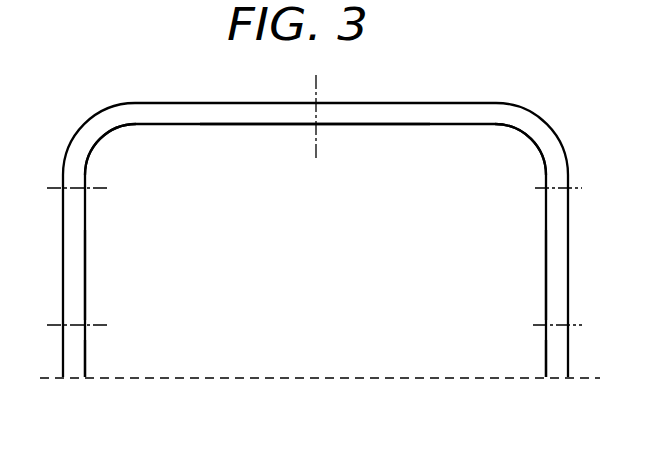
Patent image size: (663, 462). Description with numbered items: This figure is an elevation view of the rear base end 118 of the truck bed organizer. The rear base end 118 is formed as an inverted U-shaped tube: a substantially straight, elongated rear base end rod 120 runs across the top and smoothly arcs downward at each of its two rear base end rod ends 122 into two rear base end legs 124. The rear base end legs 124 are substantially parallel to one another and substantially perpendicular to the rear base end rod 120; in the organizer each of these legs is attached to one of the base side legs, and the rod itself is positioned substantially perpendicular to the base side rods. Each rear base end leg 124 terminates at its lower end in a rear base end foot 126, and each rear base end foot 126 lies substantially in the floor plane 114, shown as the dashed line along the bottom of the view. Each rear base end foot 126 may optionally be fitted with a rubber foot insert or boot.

The floor plane 114 is at (348, 377).
The rear base end 118 is at (298, 124).
The rear base end rod 120 is at (370, 125).
The rear base end rod ends 122 is at (102, 143).
The rear base end legs 124 is at (85, 287).
The rear base end foot 126 is at (87, 377).